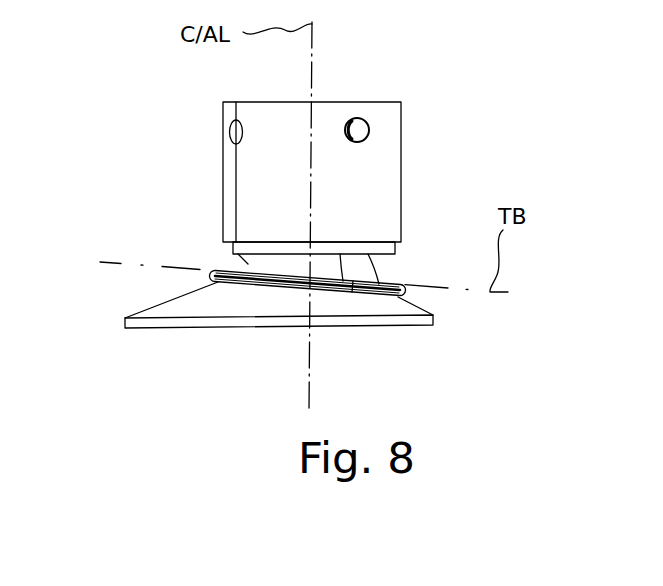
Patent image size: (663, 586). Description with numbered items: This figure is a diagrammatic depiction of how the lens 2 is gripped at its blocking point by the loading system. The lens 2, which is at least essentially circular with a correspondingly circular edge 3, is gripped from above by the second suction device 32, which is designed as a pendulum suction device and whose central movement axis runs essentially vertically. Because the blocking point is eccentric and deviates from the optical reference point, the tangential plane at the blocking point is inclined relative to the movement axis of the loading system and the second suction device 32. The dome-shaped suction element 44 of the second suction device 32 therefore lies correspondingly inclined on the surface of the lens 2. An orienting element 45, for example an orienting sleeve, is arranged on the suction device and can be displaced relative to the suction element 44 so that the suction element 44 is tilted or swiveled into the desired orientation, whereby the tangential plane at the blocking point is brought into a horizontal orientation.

The second suction device 32 is at (223, 145).
The orienting element 45 is at (233, 249).
The suction element 44 is at (216, 272).
The lens 2 is at (188, 307).
The edge 3 is at (158, 325).